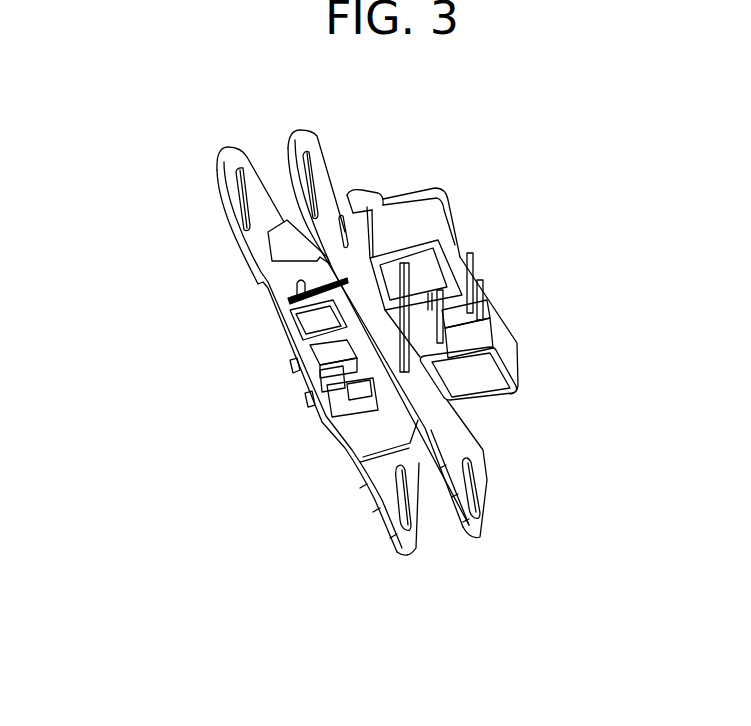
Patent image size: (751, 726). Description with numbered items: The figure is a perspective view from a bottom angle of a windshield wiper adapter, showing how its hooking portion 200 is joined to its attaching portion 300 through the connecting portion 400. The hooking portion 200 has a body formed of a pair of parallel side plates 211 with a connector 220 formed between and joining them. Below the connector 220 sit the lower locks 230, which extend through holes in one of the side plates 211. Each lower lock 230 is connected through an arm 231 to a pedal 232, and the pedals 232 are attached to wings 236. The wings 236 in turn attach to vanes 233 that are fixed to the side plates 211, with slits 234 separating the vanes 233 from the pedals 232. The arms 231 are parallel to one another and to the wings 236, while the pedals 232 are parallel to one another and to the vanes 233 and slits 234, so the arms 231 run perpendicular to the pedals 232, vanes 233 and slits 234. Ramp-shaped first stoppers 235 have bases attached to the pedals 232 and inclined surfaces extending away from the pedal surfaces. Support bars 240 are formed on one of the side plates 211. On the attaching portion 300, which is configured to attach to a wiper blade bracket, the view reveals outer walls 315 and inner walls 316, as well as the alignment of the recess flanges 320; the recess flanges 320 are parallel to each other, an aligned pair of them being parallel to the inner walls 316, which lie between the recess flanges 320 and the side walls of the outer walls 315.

The hooking portion 200 is at (242, 263).
The side plates 211 is at (397, 547).
The connector 220 is at (290, 238).
The lower locks 230 is at (313, 410).
The arms 231 is at (337, 397).
The pedals 232 is at (370, 418).
The vanes 233 is at (365, 443).
The slits 234 is at (303, 319).
The first stoppers 235 is at (340, 347).
The wings 236 is at (300, 303).
The support bars 240 is at (407, 373).
The attaching portion 300 is at (527, 352).
The outer walls 315 is at (503, 390).
The inner walls 316 is at (455, 355).
The recess flanges 320 is at (473, 328).
The connecting portion 400 is at (418, 187).